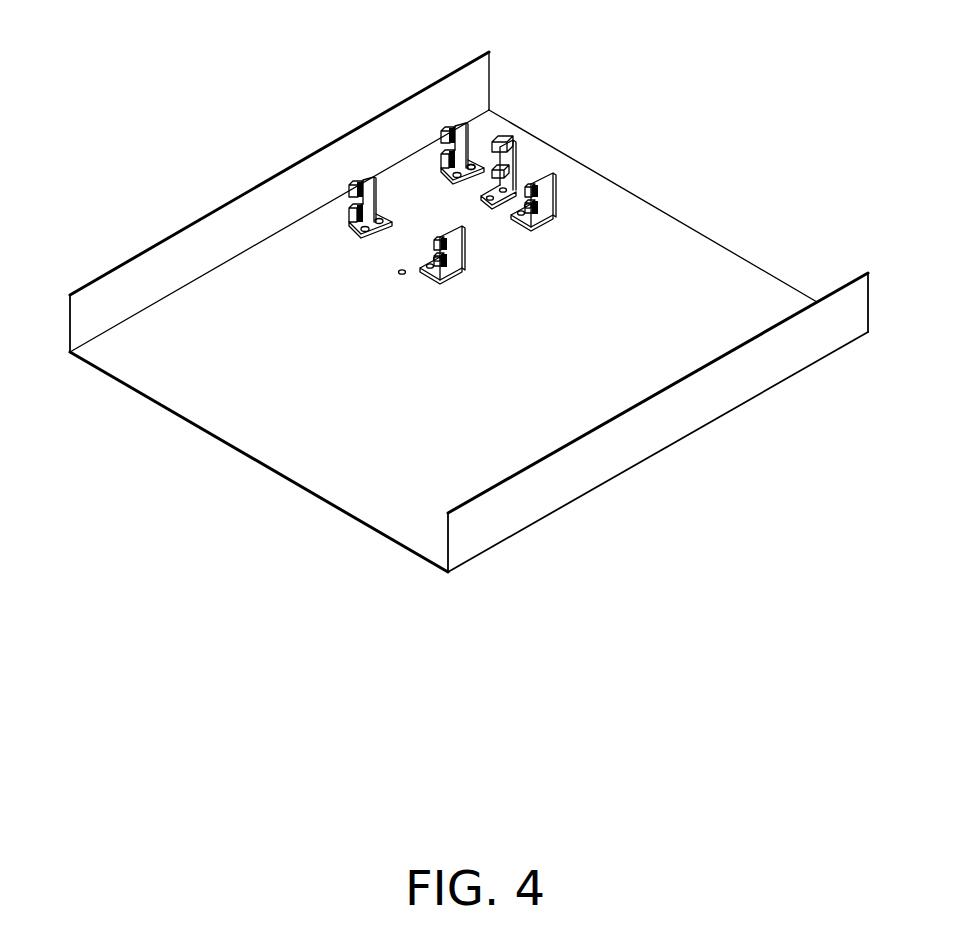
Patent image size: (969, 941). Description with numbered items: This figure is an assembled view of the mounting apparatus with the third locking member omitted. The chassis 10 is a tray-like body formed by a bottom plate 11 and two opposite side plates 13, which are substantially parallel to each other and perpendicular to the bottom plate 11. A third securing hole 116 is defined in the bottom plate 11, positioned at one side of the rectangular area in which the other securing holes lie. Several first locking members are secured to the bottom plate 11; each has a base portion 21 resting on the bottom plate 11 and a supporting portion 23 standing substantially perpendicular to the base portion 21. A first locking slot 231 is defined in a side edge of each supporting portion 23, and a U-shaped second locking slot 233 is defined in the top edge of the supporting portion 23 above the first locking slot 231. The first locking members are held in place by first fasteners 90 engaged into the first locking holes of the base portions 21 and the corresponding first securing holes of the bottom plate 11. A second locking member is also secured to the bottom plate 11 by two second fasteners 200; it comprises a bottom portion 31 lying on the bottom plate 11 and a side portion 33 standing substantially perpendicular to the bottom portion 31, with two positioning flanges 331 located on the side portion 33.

The chassis 10 is at (469, 312).
The bottom plate 11 is at (443, 341).
The side plates 13 is at (200, 245).
The third securing hole 116 is at (397, 273).
The base portion 21 is at (440, 170).
The supporting portion 23 is at (435, 152).
The first locking slot 231 is at (352, 204).
The second locking slot 233 is at (355, 188).
The first fasteners 90 is at (472, 166).
The second fasteners 200 is at (581, 142).
The bottom portion 31 is at (518, 190).
The side portion 33 is at (508, 160).
The positioning flanges 331 is at (505, 145).